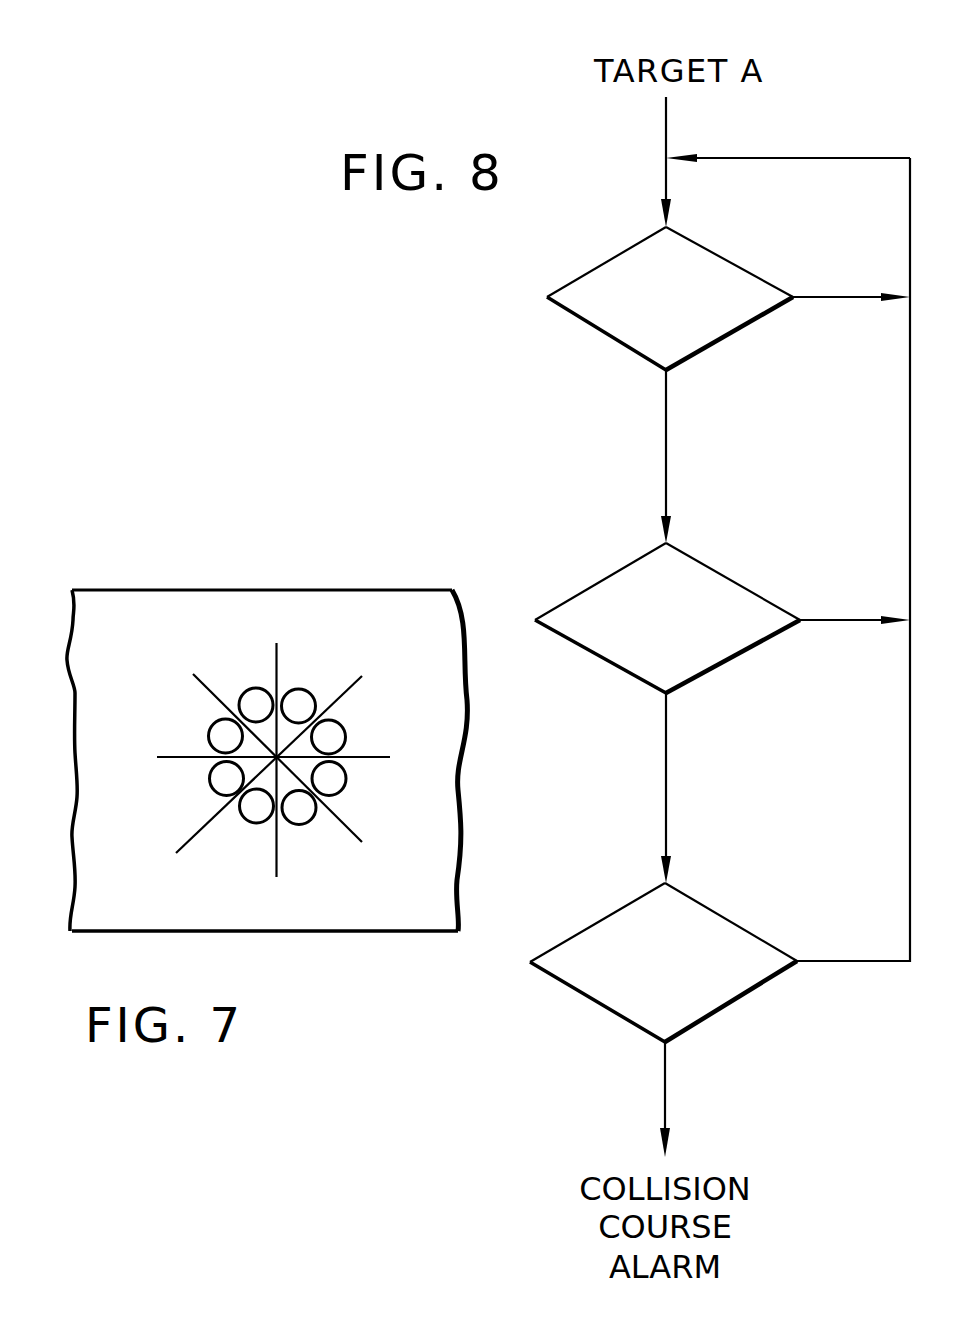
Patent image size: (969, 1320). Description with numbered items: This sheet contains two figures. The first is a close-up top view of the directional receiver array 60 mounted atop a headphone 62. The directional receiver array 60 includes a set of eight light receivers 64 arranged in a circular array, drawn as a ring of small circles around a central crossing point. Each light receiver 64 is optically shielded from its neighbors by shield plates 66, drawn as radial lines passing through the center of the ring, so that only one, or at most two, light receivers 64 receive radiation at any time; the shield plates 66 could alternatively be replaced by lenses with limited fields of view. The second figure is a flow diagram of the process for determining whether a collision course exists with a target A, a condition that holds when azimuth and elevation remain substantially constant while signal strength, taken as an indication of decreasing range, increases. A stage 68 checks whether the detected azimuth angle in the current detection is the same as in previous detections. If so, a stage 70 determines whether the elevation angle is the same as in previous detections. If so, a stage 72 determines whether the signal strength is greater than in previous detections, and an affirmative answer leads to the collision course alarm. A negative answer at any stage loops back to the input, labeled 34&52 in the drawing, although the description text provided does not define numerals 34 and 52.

In FIG. 8, the receiver 34 is at (785, 529).
In FIG. 8, the processor 52 is at (785, 529).
In FIG. 7, the directional receiver array 60 is at (268, 640).
In FIG. 7, the headphone 62 is at (413, 589).
In FIG. 7, the light receivers 64 is at (253, 815).
In FIG. 7, the shield plates 66 is at (205, 668).
In FIG. 8, the stage 68 is at (606, 263).
In FIG. 8, the stage 70 is at (592, 586).
In FIG. 8, the stage 72 is at (608, 1012).